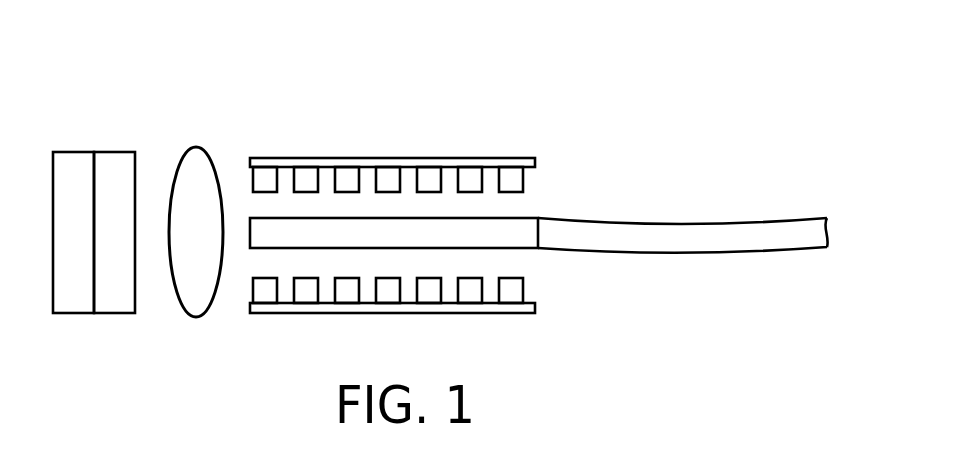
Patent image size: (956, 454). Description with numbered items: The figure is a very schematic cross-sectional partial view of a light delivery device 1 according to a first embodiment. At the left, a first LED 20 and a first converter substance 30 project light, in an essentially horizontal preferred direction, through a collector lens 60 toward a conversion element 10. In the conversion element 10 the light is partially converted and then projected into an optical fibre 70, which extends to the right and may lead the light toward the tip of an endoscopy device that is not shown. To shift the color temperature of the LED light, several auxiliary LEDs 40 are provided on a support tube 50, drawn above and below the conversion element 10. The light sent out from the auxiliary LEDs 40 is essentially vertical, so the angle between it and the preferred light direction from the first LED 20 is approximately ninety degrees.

The light delivery device 1 is at (603, 85).
The conversion element 10 is at (522, 248).
The first LED 20 is at (73, 148).
The first converter substance 30 is at (113, 148).
The auxiliary LEDs 40 is at (525, 179).
The support tube 50 is at (393, 157).
The collector lens 60 is at (197, 146).
The optical fibre 70 is at (683, 222).